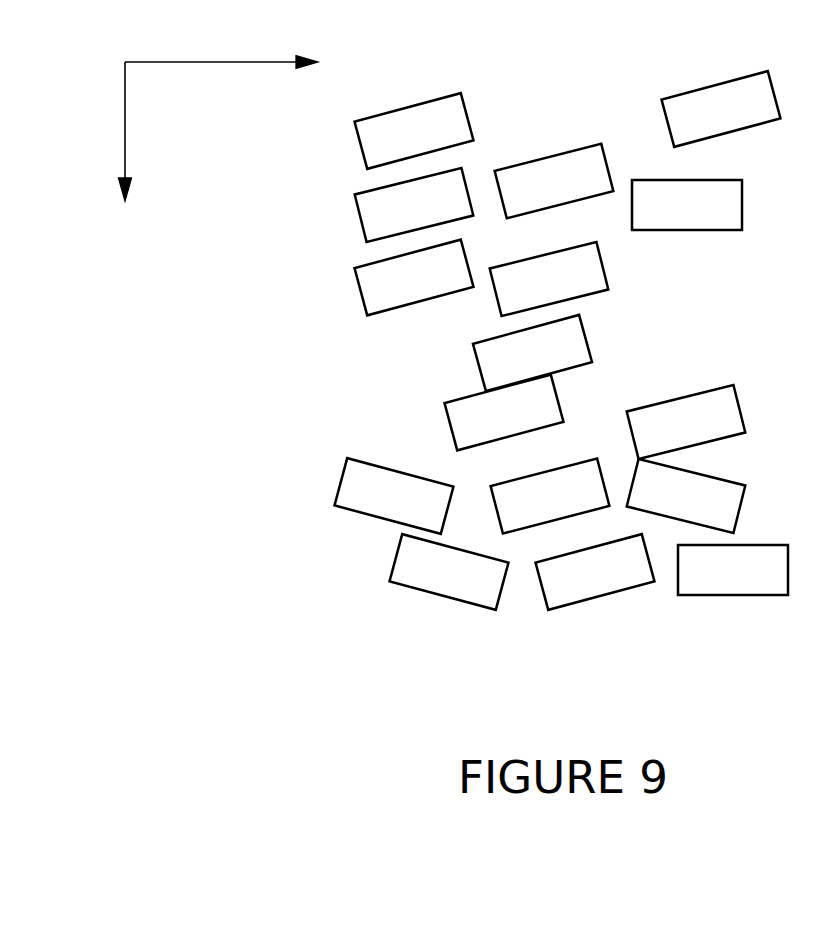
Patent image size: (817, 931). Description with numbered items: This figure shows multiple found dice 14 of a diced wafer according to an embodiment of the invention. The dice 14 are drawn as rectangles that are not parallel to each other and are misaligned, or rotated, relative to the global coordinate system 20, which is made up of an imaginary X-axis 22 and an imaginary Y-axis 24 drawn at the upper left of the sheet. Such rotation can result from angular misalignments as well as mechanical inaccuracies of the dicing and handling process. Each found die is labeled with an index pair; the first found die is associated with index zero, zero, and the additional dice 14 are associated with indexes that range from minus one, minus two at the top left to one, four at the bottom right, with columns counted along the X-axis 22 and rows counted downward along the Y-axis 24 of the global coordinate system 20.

The dice 14 is at (561, 340).
The global coordinate system 20 is at (198, 123).
The X-axis 22 is at (221, 44).
The Y-axis 24 is at (124, 144).